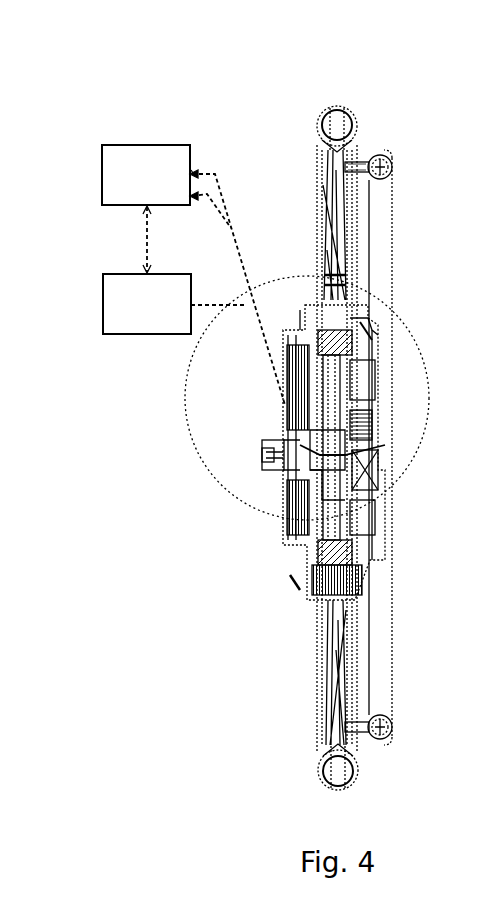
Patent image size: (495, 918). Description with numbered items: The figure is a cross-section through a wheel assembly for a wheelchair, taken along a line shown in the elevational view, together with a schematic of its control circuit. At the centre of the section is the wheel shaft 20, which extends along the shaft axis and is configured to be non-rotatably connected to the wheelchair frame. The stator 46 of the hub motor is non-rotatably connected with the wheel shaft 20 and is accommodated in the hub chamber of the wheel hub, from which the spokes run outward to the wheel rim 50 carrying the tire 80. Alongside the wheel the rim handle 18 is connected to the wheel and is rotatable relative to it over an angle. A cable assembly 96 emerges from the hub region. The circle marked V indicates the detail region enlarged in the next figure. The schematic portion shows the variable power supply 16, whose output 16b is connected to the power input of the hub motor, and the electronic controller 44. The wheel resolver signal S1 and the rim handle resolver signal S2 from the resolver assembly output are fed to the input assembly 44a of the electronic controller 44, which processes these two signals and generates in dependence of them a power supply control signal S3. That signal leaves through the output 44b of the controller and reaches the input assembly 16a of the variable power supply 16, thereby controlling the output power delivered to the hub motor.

The electronic controller 44 is at (146, 175).
The input assembly 44a is at (194, 171).
The output 44b is at (146, 207).
The variable power supply 16 is at (147, 304).
The input assembly 16a is at (146, 272).
The output 16b is at (190, 310).
The wheel resolver signal S1 is at (203, 172).
The rim handle resolver signal S2 is at (237, 287).
The power supply control signal S3 is at (152, 266).
The rim handle 18 is at (385, 210).
The tire 80 is at (355, 118).
The wheel rim 50 is at (356, 148).
The stator 46 is at (375, 330).
The wheel shaft 20 is at (378, 470).
The cable assembly 96 is at (265, 458).
The detail V is at (430, 396).